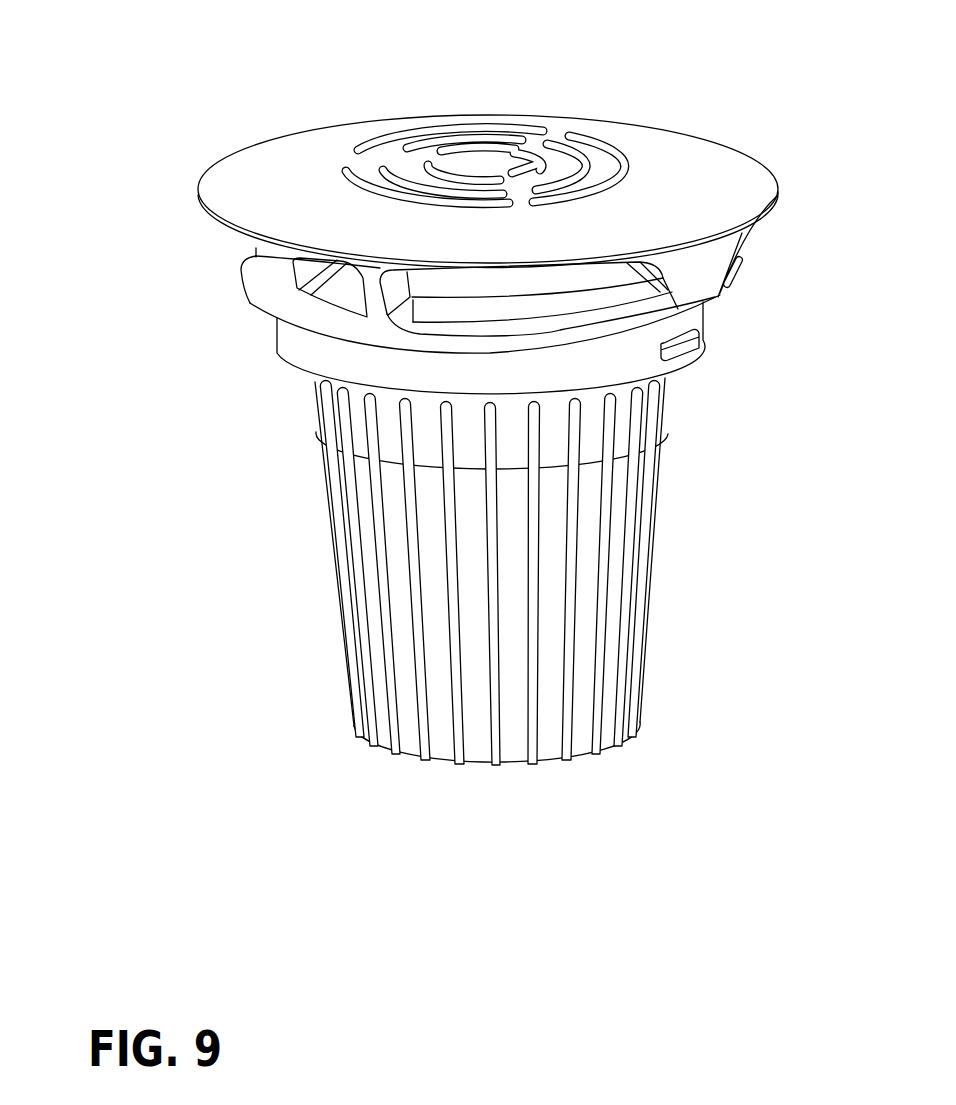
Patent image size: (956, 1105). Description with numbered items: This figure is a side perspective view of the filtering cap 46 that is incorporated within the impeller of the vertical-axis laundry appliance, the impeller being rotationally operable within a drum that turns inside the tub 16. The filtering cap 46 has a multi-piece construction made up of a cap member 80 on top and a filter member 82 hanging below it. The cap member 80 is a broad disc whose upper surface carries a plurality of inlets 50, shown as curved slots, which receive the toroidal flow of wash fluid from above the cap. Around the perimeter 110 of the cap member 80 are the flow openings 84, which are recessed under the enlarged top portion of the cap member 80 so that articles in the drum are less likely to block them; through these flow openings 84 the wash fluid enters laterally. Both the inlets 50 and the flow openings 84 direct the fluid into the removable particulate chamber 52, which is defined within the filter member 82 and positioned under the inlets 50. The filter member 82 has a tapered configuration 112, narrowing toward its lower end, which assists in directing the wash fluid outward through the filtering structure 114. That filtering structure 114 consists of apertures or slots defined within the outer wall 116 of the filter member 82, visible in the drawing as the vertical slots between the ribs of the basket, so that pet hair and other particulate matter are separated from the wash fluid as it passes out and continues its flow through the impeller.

The tub 16 is at (488, 571).
The filtering cap 46 is at (435, 225).
The inlets 50 is at (617, 153).
The removable particulate chamber 52 is at (377, 479).
The cap member 80 is at (421, 142).
The filter member 82 is at (647, 413).
The flow openings 84 is at (264, 275).
The perimeter 110 is at (205, 220).
The tapered configuration 112 is at (488, 571).
The filtering structure 114 is at (660, 599).
The outer wall 116 is at (561, 573).